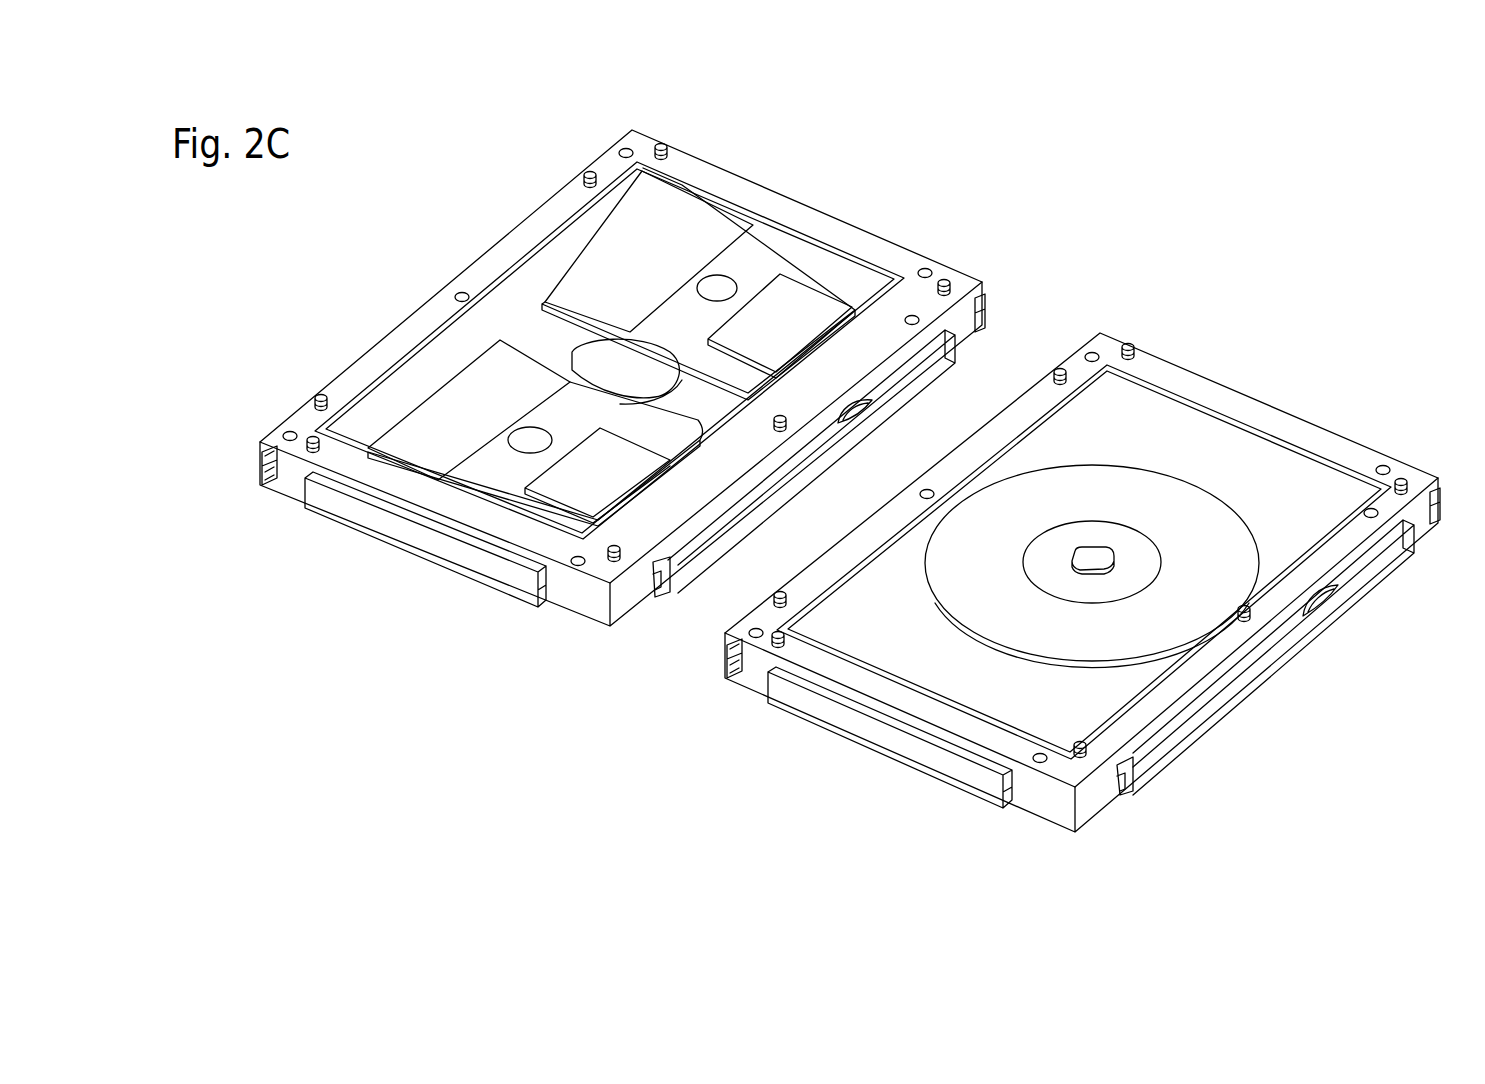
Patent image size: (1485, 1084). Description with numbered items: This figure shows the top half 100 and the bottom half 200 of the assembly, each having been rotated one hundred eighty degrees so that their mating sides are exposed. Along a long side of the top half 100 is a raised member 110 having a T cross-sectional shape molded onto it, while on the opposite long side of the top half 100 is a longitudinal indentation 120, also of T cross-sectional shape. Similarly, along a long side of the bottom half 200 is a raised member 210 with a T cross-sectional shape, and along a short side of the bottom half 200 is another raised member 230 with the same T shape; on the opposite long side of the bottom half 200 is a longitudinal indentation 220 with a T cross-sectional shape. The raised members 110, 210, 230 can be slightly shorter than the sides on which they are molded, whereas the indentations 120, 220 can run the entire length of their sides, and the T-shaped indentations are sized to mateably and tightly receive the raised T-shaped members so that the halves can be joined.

The top half 100 is at (627, 142).
The raised member 110 is at (658, 588).
The longitudinal indentation 120 is at (265, 460).
The bottom half 200 is at (1288, 333).
The raised member 210 is at (1148, 773).
The longitudinal indentation 220 is at (727, 670).
The raised member 230 is at (420, 535).